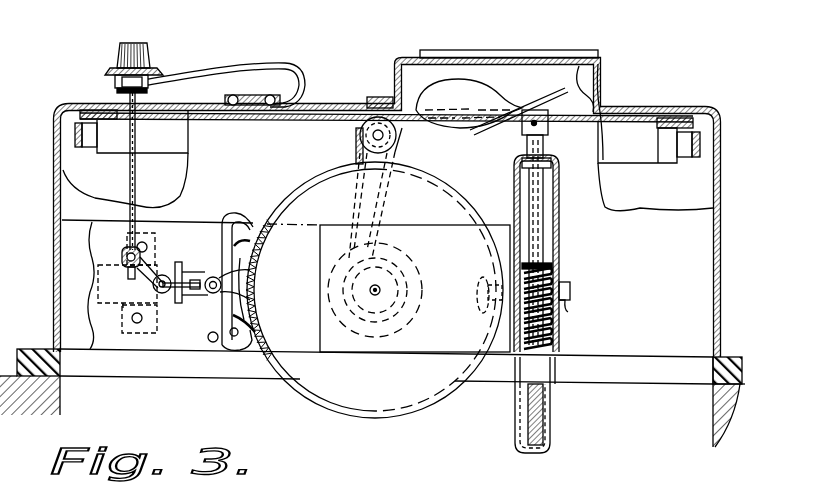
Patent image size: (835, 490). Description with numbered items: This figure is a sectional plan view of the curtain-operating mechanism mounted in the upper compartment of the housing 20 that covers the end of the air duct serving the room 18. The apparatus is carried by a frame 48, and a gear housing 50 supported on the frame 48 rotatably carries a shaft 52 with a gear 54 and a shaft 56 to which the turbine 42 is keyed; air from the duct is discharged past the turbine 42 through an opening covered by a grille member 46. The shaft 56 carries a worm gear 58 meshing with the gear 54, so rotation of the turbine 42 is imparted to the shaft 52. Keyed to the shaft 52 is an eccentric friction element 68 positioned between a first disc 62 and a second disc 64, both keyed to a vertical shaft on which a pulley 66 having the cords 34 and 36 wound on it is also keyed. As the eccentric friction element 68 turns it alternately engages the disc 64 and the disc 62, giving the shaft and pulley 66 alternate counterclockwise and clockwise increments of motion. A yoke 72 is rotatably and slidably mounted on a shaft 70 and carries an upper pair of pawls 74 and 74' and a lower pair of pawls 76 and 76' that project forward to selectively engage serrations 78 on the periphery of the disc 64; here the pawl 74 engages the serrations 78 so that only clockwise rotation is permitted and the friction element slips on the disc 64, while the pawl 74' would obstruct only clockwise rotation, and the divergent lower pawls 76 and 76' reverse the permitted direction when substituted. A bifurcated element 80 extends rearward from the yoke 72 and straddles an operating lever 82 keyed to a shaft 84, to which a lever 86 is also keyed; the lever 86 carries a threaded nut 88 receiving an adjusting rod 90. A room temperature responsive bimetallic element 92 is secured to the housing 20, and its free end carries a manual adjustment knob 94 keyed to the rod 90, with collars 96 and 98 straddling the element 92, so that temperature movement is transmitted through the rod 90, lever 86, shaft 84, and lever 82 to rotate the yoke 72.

The room 18 is at (339, 46).
The housing 20 is at (329, 107).
The cord 34 is at (232, 111).
The cord 36 is at (490, 121).
The turbine 42 is at (495, 92).
The grille member 46 is at (595, 60).
The frame 48 is at (178, 351).
The gear housing 50 is at (558, 219).
The shaft 52 is at (566, 303).
The gear 54 is at (540, 418).
The shaft 56 is at (544, 243).
The worm gear 58 is at (554, 271).
The first disc 62 is at (442, 197).
The second disc 64 is at (281, 378).
The pulley 66 is at (410, 330).
The eccentric friction element 68 is at (487, 298).
The shaft 70 is at (214, 296).
The yoke 72 is at (217, 273).
The pawl 74 is at (237, 353).
The pawl 74' is at (241, 264).
The pawl 76 is at (266, 319).
The pawl 76' is at (266, 246).
The serrations 78 is at (260, 296).
The bifurcated element 80 is at (188, 272).
The operating lever 82 is at (193, 294).
The shaft 84 is at (165, 275).
The lever 86 is at (140, 280).
The threaded nut 88 is at (90, 251).
The adjusting rod 90 is at (135, 185).
The bimetallic thermostatic element 92 is at (282, 70).
The manual adjustment knob 94 is at (150, 60).
The collar 96 is at (111, 73).
The collar 98 is at (149, 91).